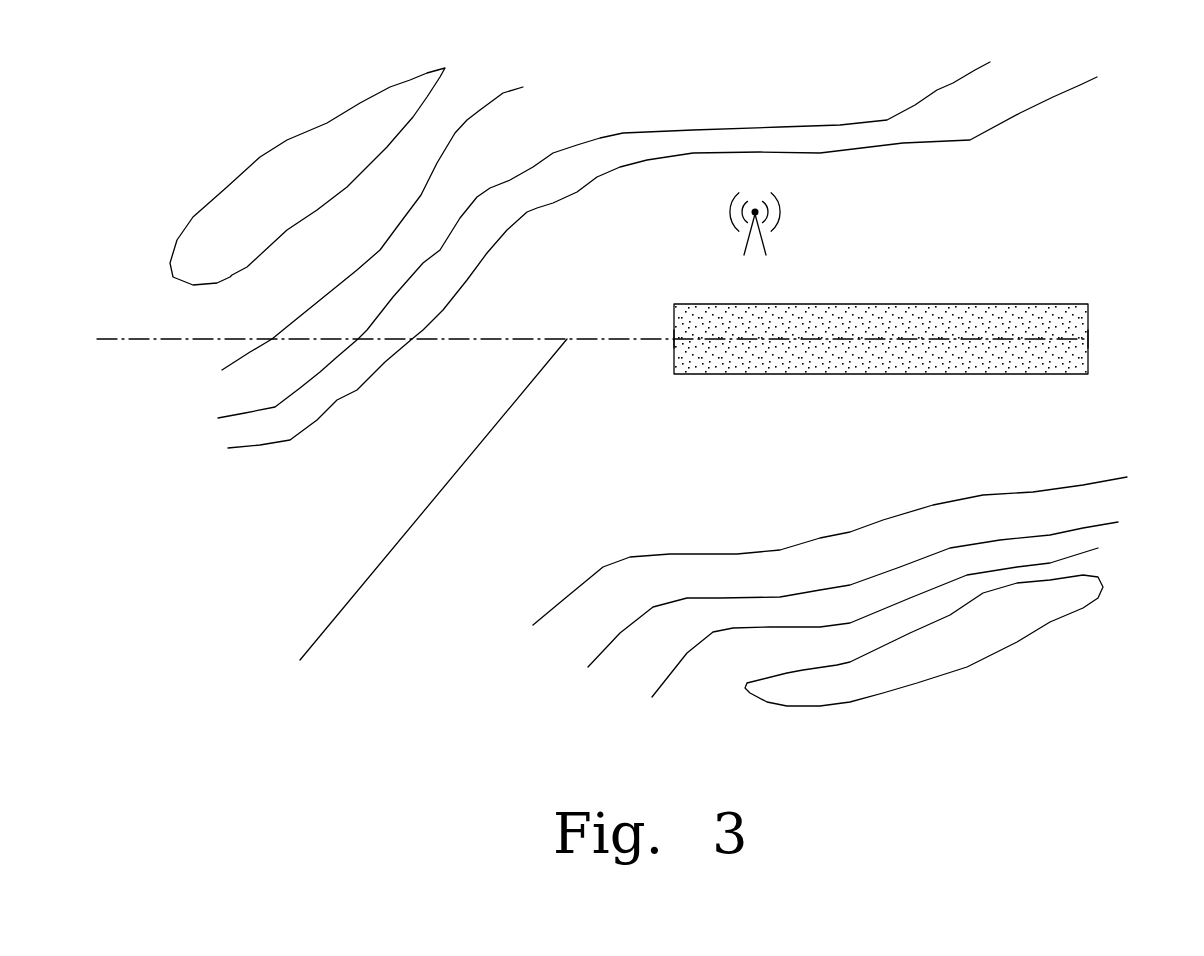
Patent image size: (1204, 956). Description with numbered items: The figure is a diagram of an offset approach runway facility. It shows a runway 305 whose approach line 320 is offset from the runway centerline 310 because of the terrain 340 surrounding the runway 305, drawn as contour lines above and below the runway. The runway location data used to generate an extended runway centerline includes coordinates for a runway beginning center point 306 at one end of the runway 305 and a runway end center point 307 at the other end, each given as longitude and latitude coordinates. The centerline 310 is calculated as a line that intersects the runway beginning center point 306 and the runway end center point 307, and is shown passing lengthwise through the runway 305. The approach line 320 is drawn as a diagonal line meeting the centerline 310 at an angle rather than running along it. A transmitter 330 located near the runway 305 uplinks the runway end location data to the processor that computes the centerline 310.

The runway 305 is at (917, 304).
The runway beginning center point 306 is at (674, 339).
The runway end center point 307 is at (1090, 338).
The runway centerline 310 is at (780, 320).
The approach line 320 is at (343, 610).
The transmitter 330 is at (782, 212).
The terrain 340 is at (518, 72).